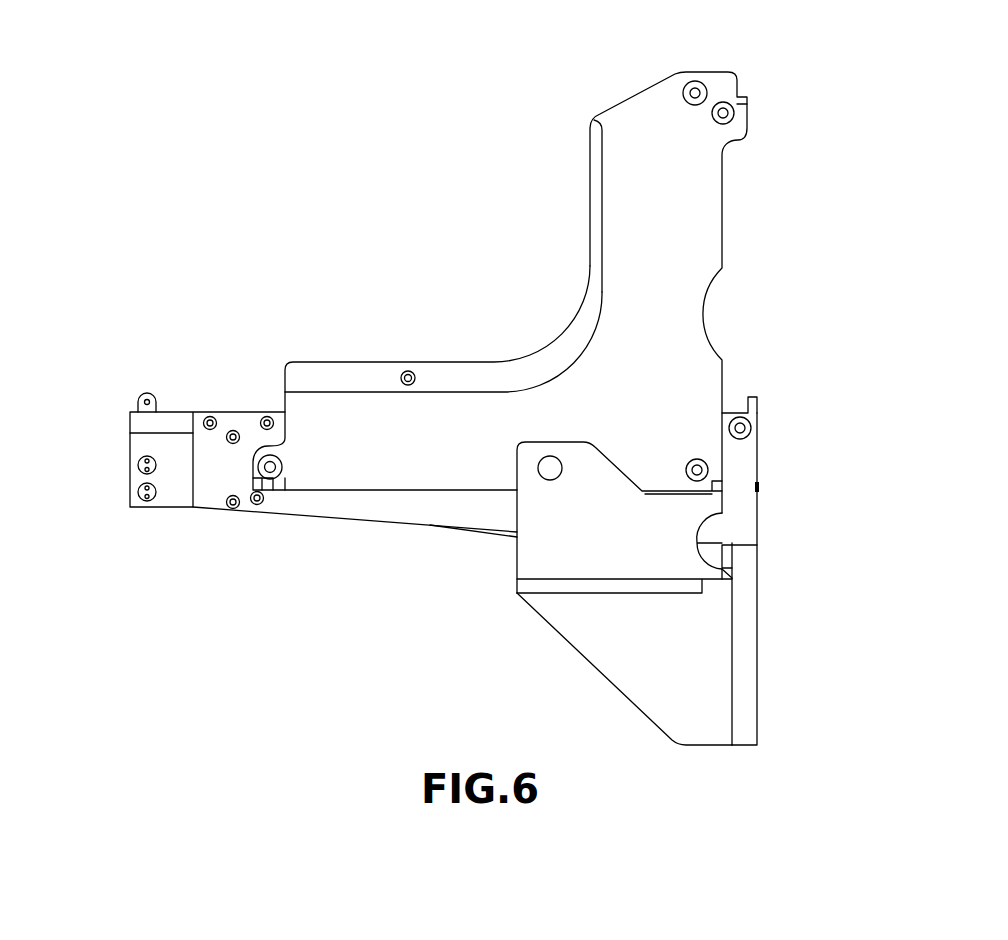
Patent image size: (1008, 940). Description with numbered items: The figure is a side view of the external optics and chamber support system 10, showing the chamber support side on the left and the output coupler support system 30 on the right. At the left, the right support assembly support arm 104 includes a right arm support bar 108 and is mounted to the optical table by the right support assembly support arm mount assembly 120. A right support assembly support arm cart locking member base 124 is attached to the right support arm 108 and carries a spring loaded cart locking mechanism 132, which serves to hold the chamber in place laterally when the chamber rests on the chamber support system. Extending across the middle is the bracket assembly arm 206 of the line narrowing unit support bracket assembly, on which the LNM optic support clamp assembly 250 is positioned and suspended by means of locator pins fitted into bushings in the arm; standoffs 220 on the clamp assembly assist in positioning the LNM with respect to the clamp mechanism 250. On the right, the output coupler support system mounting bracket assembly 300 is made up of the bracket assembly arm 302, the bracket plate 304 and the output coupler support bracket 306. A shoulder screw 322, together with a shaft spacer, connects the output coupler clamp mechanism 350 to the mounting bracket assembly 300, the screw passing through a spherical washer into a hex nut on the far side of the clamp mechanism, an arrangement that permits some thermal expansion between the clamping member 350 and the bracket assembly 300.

The external optics and chamber support system 10 is at (262, 378).
The output coupler support system 30 is at (818, 511).
The right support assembly support arm 104 is at (168, 510).
The right arm support bar 108 is at (348, 513).
The right support assembly support arm mount assembly 120 is at (768, 428).
The right support assembly support arm cart locking member base 124 is at (140, 446).
The spring loaded cart locking mechanism 132 is at (147, 393).
The bracket assembly arm 206 is at (497, 536).
The standoff 220 is at (693, 80).
The LNM optic support clamp assembly 250 is at (563, 327).
The output coupler support system mounting bracket assembly 300 is at (720, 663).
The output coupler support system bracket assembly arm 302 is at (635, 687).
The bracket plate 304 is at (747, 718).
The output coupler support bracket 306 is at (553, 590).
The shoulder screw 322 is at (553, 460).
The output coupler clamp mechanism 350 is at (710, 204).